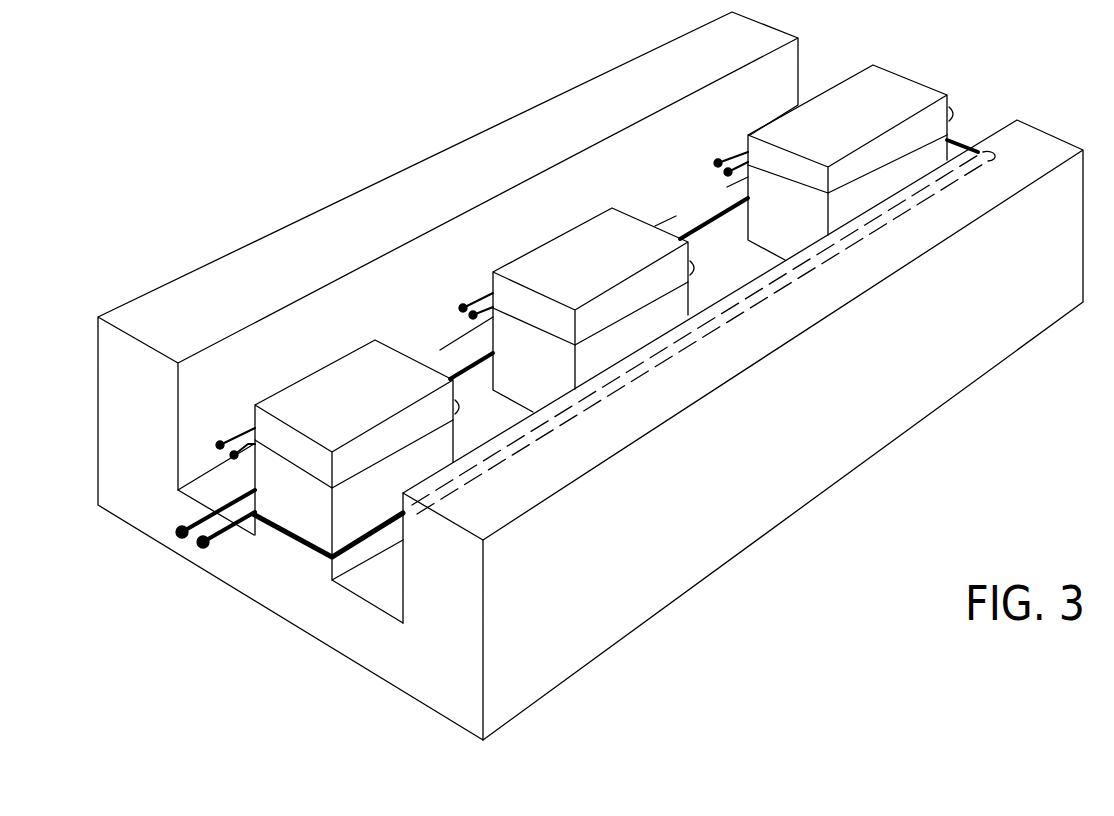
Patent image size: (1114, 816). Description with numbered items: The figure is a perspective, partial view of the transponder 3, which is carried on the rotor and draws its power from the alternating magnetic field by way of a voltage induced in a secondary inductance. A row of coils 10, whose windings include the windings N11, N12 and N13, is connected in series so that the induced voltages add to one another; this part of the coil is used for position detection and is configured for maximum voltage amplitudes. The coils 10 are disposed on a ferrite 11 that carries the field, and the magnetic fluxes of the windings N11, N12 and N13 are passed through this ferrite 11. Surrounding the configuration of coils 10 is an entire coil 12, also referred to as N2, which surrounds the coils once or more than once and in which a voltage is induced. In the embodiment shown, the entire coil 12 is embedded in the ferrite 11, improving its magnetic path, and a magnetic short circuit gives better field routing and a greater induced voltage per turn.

The transponder 3 is at (150, 269).
The coils 10 is at (376, 462).
The ferrite 11 is at (407, 657).
The entire coil 12 is at (214, 540).
The winding N11 is at (357, 490).
The winding N12 is at (593, 336).
The winding N13 is at (850, 183).
The entire coil N2 is at (328, 541).